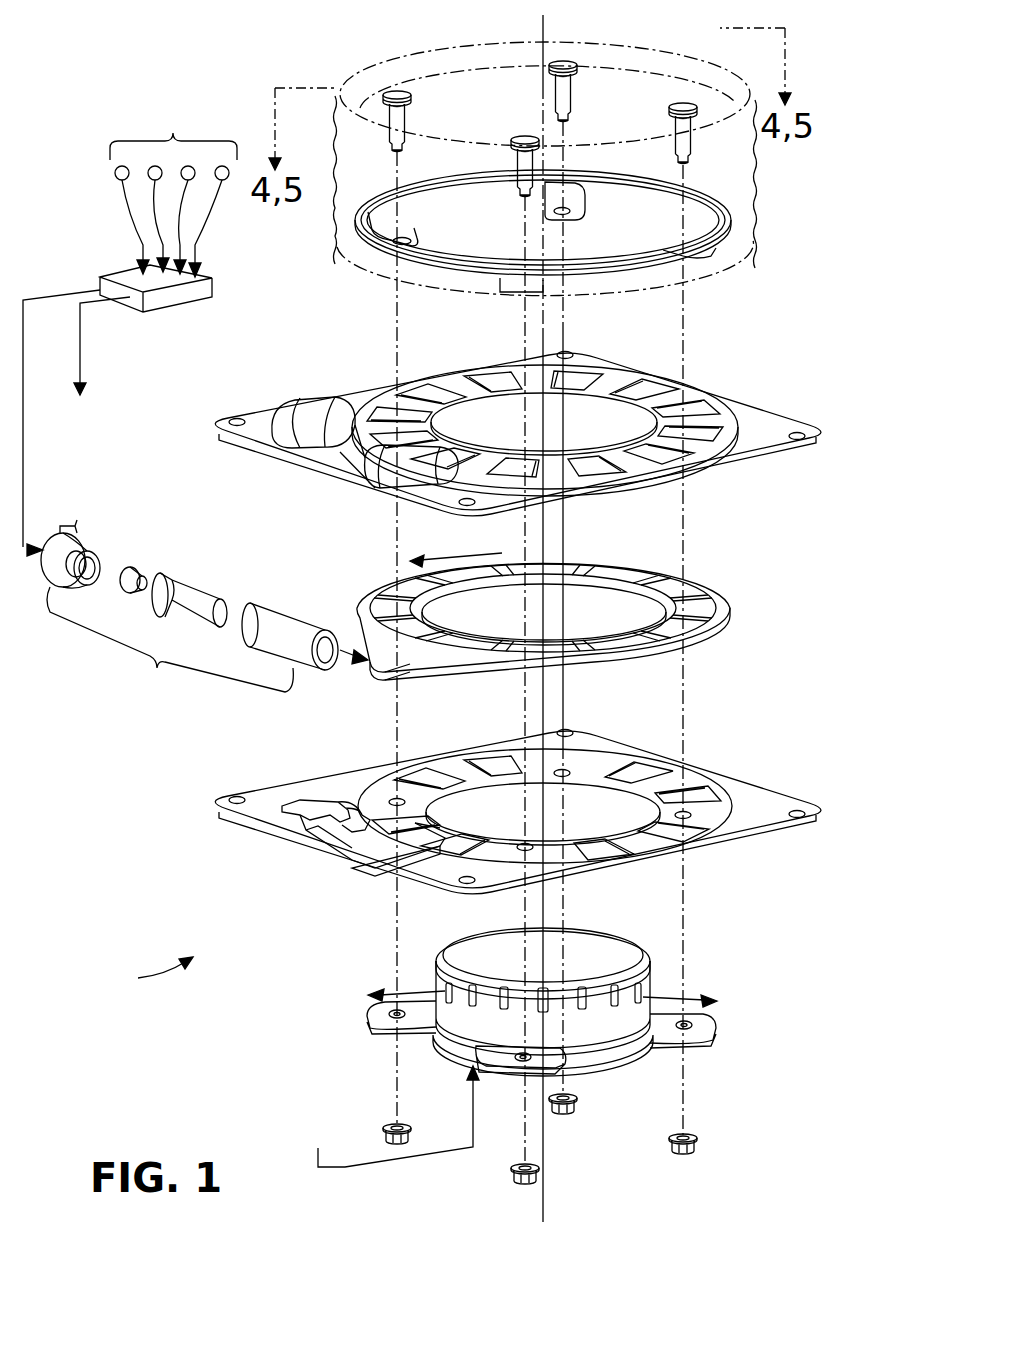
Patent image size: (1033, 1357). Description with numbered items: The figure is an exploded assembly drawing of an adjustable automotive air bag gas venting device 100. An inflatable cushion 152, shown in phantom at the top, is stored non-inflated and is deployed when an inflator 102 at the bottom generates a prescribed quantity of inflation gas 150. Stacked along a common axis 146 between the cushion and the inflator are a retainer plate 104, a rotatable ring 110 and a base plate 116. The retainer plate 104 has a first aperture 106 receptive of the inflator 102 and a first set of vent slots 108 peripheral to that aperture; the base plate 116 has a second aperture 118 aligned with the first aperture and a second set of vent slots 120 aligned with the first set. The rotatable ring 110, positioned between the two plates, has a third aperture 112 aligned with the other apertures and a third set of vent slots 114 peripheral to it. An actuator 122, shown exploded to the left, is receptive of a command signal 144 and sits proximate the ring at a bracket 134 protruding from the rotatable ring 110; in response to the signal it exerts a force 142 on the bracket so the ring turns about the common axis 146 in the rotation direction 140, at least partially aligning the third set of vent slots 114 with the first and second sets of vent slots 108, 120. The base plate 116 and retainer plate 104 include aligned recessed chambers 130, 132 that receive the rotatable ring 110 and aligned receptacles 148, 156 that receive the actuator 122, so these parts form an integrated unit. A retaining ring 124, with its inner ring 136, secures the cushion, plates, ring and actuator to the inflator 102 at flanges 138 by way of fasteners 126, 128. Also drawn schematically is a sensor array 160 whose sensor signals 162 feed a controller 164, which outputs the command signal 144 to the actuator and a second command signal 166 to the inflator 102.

The adjustable automotive air bag gas venting device 100 is at (147, 974).
The inflator 102 is at (562, 991).
The retainer plate 104 is at (513, 794).
The first aperture 106 is at (590, 792).
The first set of vent slots 108 is at (636, 782).
The rotatable ring 110 is at (539, 620).
The third aperture 112 is at (608, 607).
The third set of vent slots 114 is at (697, 628).
The base plate 116 is at (518, 411).
The second aperture 118 is at (600, 405).
The second set of vent slots 120 is at (706, 422).
The actuator 122 is at (167, 609).
The retaining ring 124 is at (566, 241).
The fasteners 126 is at (683, 100).
The fasteners 128 is at (692, 1150).
The recessed chamber 130 is at (630, 466).
The recessed chamber 132 is at (348, 775).
The bracket 134 is at (375, 675).
The inner ring 136 is at (697, 228).
The flanges 138 is at (708, 1042).
The rotation direction arrow 140 is at (502, 553).
The force 142 is at (345, 640).
The command signal 144 is at (23, 495).
The common axis 146 is at (543, 30).
The receptacle 148 is at (307, 403).
The inflation gas 150 is at (394, 992).
The inflatable cushion 152 is at (378, 65).
The receptacle 156 is at (310, 822).
The sensor array 160 is at (173, 142).
The sensor signals 162 is at (220, 205).
The controller 164 is at (122, 278).
The command signal 166 is at (80, 342).